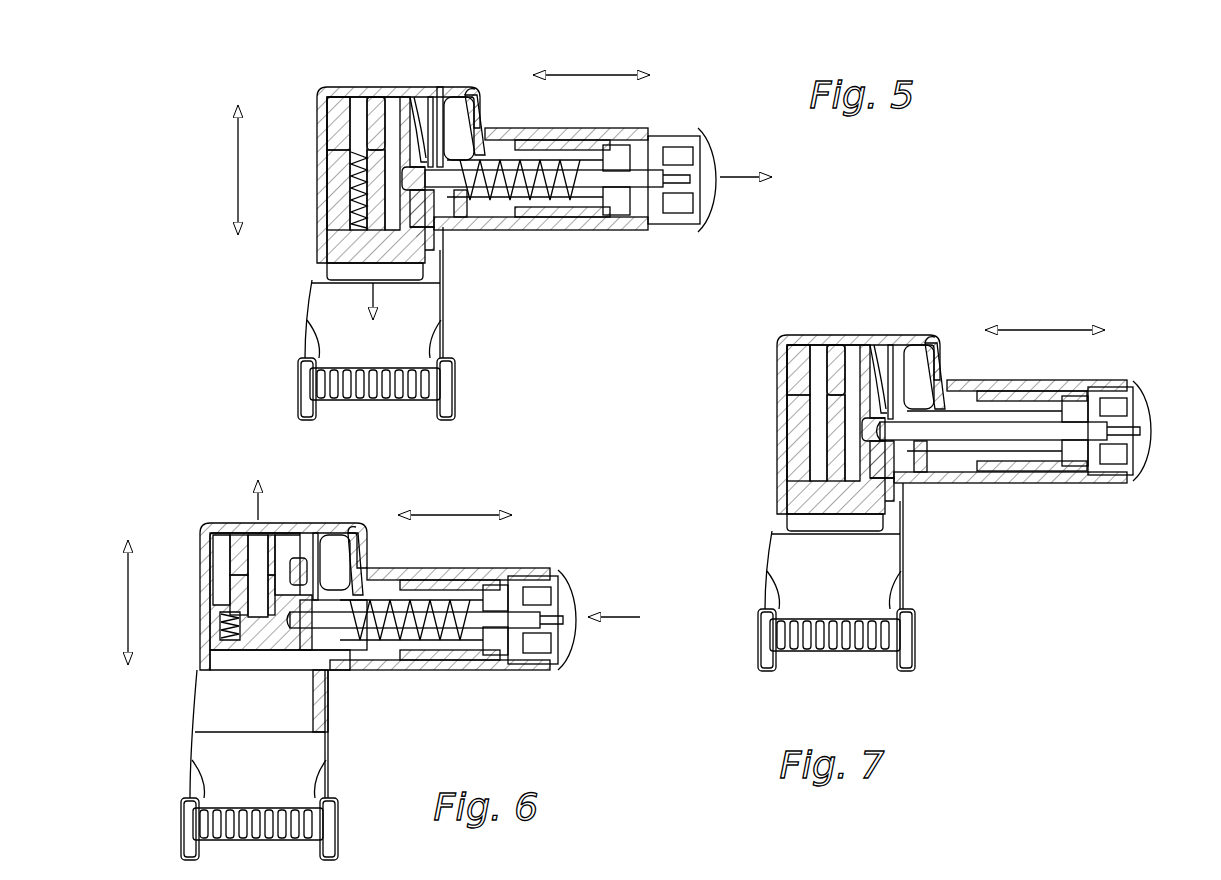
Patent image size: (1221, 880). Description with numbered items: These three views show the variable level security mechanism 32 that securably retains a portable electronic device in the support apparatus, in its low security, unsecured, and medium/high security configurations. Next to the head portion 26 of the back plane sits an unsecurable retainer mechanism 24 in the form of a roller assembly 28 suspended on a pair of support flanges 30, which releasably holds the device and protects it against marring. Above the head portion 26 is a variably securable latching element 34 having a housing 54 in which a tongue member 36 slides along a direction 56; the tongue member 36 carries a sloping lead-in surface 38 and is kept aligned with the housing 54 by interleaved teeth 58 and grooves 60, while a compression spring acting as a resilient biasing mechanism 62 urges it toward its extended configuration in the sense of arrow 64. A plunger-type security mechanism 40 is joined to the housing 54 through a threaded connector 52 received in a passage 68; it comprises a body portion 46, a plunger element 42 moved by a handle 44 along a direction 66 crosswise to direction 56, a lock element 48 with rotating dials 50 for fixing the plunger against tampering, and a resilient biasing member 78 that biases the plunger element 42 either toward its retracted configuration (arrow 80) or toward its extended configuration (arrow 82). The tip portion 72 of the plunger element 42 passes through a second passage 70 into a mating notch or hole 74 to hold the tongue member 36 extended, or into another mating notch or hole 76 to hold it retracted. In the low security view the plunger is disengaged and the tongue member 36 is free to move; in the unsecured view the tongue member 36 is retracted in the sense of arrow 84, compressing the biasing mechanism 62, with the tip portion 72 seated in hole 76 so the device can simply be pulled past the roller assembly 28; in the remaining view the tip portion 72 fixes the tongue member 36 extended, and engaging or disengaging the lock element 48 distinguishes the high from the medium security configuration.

In FIG. 5, the unsecurable retainer mechanism 24 is at (372, 388).
In FIG. 6, the unsecurable retainer mechanism 24 is at (257, 821).
In FIG. 7, the unsecurable retainer mechanism 24 is at (836, 638).
In FIG. 5, the head portion 26 is at (338, 363).
In FIG. 6, the head portion 26 is at (220, 806).
In FIG. 7, the head portion 26 is at (869, 610).
In FIG. 5, the roller assembly 28 is at (373, 403).
In FIG. 6, the roller assembly 28 is at (256, 840).
In FIG. 7, the roller assembly 28 is at (833, 661).
In FIG. 5, the support flanges 30 is at (374, 389).
In FIG. 6, the support flanges 30 is at (259, 829).
In FIG. 7, the support flanges 30 is at (836, 640).
In FIG. 5, the variable level security mechanism 32 is at (199, 62).
In FIG. 6, the variable level security mechanism 32 is at (202, 446).
In FIG. 7, the variable level security mechanism 32 is at (709, 454).
In FIG. 5, the latching element 34 is at (312, 292).
In FIG. 6, the latching element 34 is at (215, 734).
In FIG. 7, the latching element 34 is at (794, 546).
In FIG. 5, the tongue member 36 is at (311, 180).
In FIG. 6, the tongue member 36 is at (233, 602).
In FIG. 7, the tongue member 36 is at (781, 429).
In FIG. 5, the lead-in surface 38 is at (321, 269).
In FIG. 6, the lead-in surface 38 is at (251, 675).
In FIG. 7, the lead-in surface 38 is at (792, 519).
In FIG. 5, the plunger-type security mechanism 40 is at (674, 155).
In FIG. 6, the plunger-type security mechanism 40 is at (535, 595).
In FIG. 7, the plunger-type security mechanism 40 is at (1117, 406).
In FIG. 5, the plunger element 42 is at (557, 137).
In FIG. 6, the plunger element 42 is at (426, 578).
In FIG. 7, the plunger element 42 is at (1010, 392).
In FIG. 5, the handle 44 is at (720, 162).
In FIG. 6, the handle 44 is at (584, 608).
In FIG. 7, the handle 44 is at (1155, 416).
In FIG. 5, the body portion 46 is at (556, 203).
In FIG. 6, the body portion 46 is at (445, 645).
In FIG. 7, the body portion 46 is at (1017, 455).
In FIG. 5, the lock element 48 is at (538, 151).
In FIG. 6, the lock element 48 is at (424, 591).
In FIG. 7, the lock element 48 is at (997, 405).
In FIG. 5, the rotating dials 50 is at (559, 150).
In FIG. 6, the rotating dials 50 is at (444, 592).
In FIG. 7, the rotating dials 50 is at (1027, 405).
In FIG. 5, the threaded connector 52 is at (467, 94).
In FIG. 6, the threaded connector 52 is at (341, 535).
In FIG. 7, the threaded connector 52 is at (921, 351).
In FIG. 5, the housing 54 is at (382, 151).
In FIG. 6, the housing 54 is at (268, 575).
In FIG. 7, the housing 54 is at (841, 403).
In FIG. 5, the direction 56 is at (224, 170).
In FIG. 6, the direction 56 is at (110, 602).
In FIG. 5, the interleaved teeth 58 is at (330, 113).
In FIG. 6, the interleaved teeth 58 is at (212, 545).
In FIG. 7, the interleaved teeth 58 is at (787, 362).
In FIG. 5, the grooves 60 is at (330, 167).
In FIG. 6, the grooves 60 is at (214, 580).
In FIG. 7, the grooves 60 is at (787, 421).
In FIG. 5, the resilient biasing mechanism 62 is at (314, 185).
In FIG. 6, the resilient biasing mechanism 62 is at (190, 612).
In FIG. 5, the arrow 64 is at (367, 317).
In FIG. 5, the direction 66 is at (591, 61).
In FIG. 6, the direction 66 is at (455, 502).
In FIG. 7, the direction 66 is at (1045, 317).
In FIG. 5, the passage 68 is at (491, 96).
In FIG. 6, the passage 68 is at (376, 537).
In FIG. 7, the passage 68 is at (953, 348).
In FIG. 5, the passage 70 is at (412, 111).
In FIG. 6, the passage 70 is at (312, 544).
In FIG. 7, the passage 70 is at (887, 352).
In FIG. 5, the tip portion 72 is at (439, 101).
In FIG. 6, the tip portion 72 is at (344, 656).
In FIG. 7, the tip portion 72 is at (915, 466).
In FIG. 5, the mating notch or hole 74 is at (383, 100).
In FIG. 6, the mating notch or hole 74 is at (288, 527).
In FIG. 7, the mating notch or hole 74 is at (858, 352).
In FIG. 5, the mating notch or hole 76 is at (446, 214).
In FIG. 6, the mating notch or hole 76 is at (332, 666).
In FIG. 7, the mating notch or hole 76 is at (920, 479).
In FIG. 5, the resilient biasing member 78 is at (536, 229).
In FIG. 6, the resilient biasing member 78 is at (424, 670).
In FIG. 5, the arrow 80 is at (760, 177).
In FIG. 6, the arrow 82 is at (628, 619).
In FIG. 6, the arrow 84 is at (257, 486).